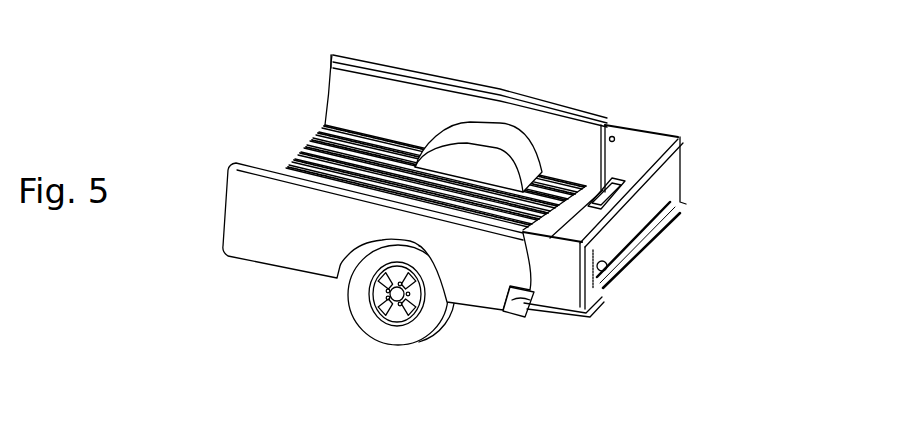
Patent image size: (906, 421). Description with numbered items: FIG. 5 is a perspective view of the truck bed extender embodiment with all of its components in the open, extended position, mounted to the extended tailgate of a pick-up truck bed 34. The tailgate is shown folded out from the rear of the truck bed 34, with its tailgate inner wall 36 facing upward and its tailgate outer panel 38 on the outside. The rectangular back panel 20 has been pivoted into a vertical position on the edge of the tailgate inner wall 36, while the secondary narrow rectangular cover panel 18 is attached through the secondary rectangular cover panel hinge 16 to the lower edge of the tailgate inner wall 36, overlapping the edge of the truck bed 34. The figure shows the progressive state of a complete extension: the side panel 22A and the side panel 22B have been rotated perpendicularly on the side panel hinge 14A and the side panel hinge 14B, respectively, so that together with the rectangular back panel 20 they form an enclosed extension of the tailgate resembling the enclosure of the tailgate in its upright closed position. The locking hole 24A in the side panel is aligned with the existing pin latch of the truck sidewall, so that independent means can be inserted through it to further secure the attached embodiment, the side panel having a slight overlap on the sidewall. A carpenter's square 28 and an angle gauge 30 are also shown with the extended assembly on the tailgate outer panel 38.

The side panel hinge 14A is at (678, 137).
The side panel hinge 14B is at (585, 275).
The secondary rectangular cover panel hinge 16 is at (633, 202).
The secondary narrow rectangular cover panel 18 is at (592, 196).
The rectangular back panel 20 is at (633, 220).
The side panel 22A is at (637, 165).
The side panel 22B is at (572, 277).
The locking hole 24A is at (615, 136).
The carpenter's square 28 is at (613, 288).
The angle gauge 30 is at (636, 267).
The truck bed 34 is at (353, 160).
The tailgate inner wall 36 is at (578, 242).
The tailgate outer panel 38 is at (580, 313).